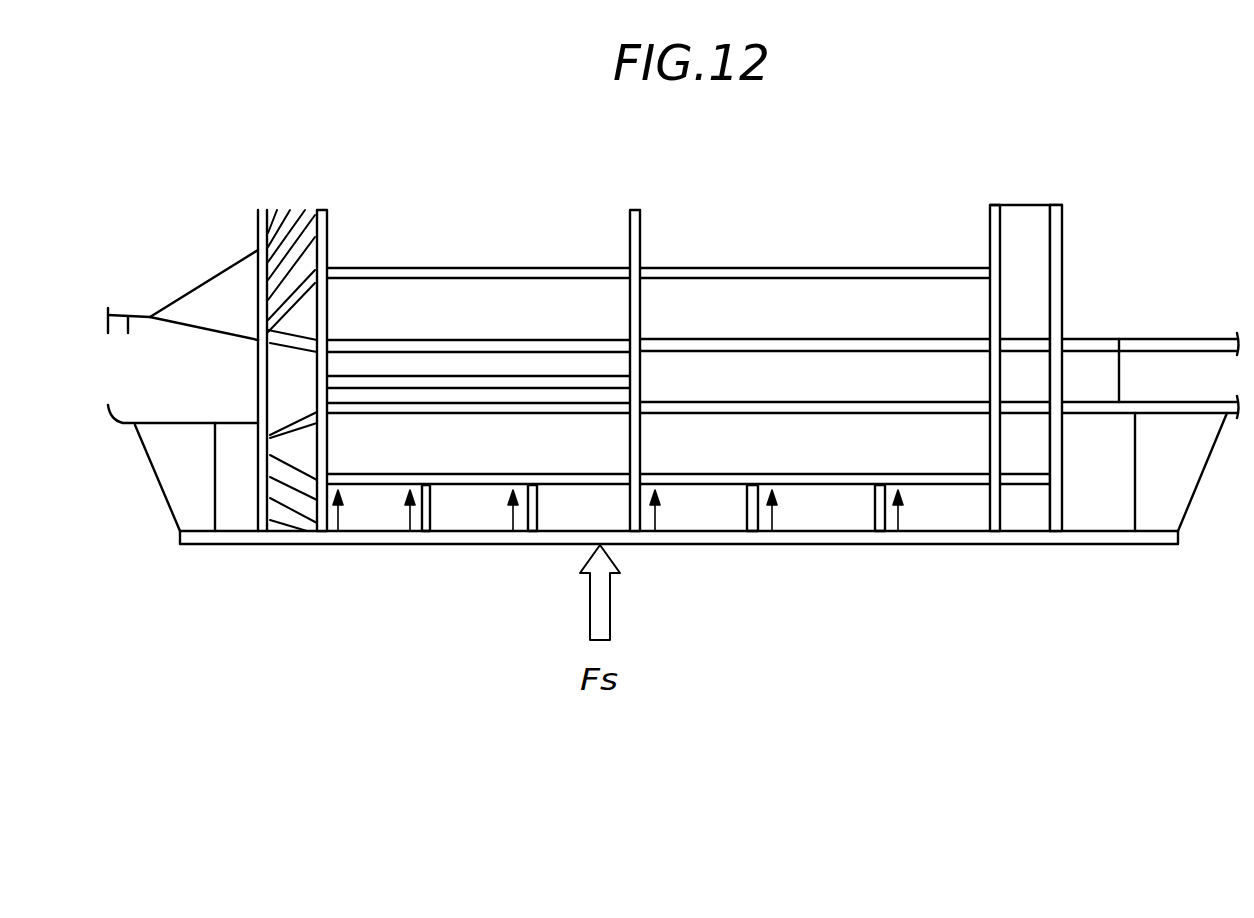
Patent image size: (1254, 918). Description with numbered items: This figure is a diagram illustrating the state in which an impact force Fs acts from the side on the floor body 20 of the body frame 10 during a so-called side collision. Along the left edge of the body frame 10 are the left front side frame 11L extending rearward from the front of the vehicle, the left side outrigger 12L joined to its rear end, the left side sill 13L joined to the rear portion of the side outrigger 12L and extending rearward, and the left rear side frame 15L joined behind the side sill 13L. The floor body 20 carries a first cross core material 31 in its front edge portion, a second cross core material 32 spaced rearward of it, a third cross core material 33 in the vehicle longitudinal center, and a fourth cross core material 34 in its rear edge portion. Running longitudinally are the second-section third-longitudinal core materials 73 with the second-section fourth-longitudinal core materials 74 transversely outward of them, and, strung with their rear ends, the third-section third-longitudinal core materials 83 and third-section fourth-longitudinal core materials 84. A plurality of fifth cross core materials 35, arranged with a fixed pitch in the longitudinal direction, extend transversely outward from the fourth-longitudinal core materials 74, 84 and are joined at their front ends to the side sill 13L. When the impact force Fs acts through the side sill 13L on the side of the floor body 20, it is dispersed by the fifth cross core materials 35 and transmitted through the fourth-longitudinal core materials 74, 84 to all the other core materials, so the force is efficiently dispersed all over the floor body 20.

The body frame 10 is at (200, 625).
The left front side frame 11L is at (128, 318).
The left side outrigger 12L is at (175, 488).
The left side sill 13L is at (358, 538).
The left rear side frame 15L is at (1178, 360).
The floor body 20 is at (1063, 243).
The first cross core material 31 is at (257, 228).
The second cross core material 32 is at (327, 228).
The third cross core material 33 is at (640, 246).
The fourth cross core material 34 is at (1010, 233).
The fifth cross core materials 35 is at (432, 505).
The second-section third-longitudinal core materials 73 is at (447, 403).
The second-section fourth-longitudinal core materials 74 is at (468, 476).
The third-section third-longitudinal core materials 83 is at (805, 400).
The third-section fourth-longitudinal core materials 84 is at (813, 478).